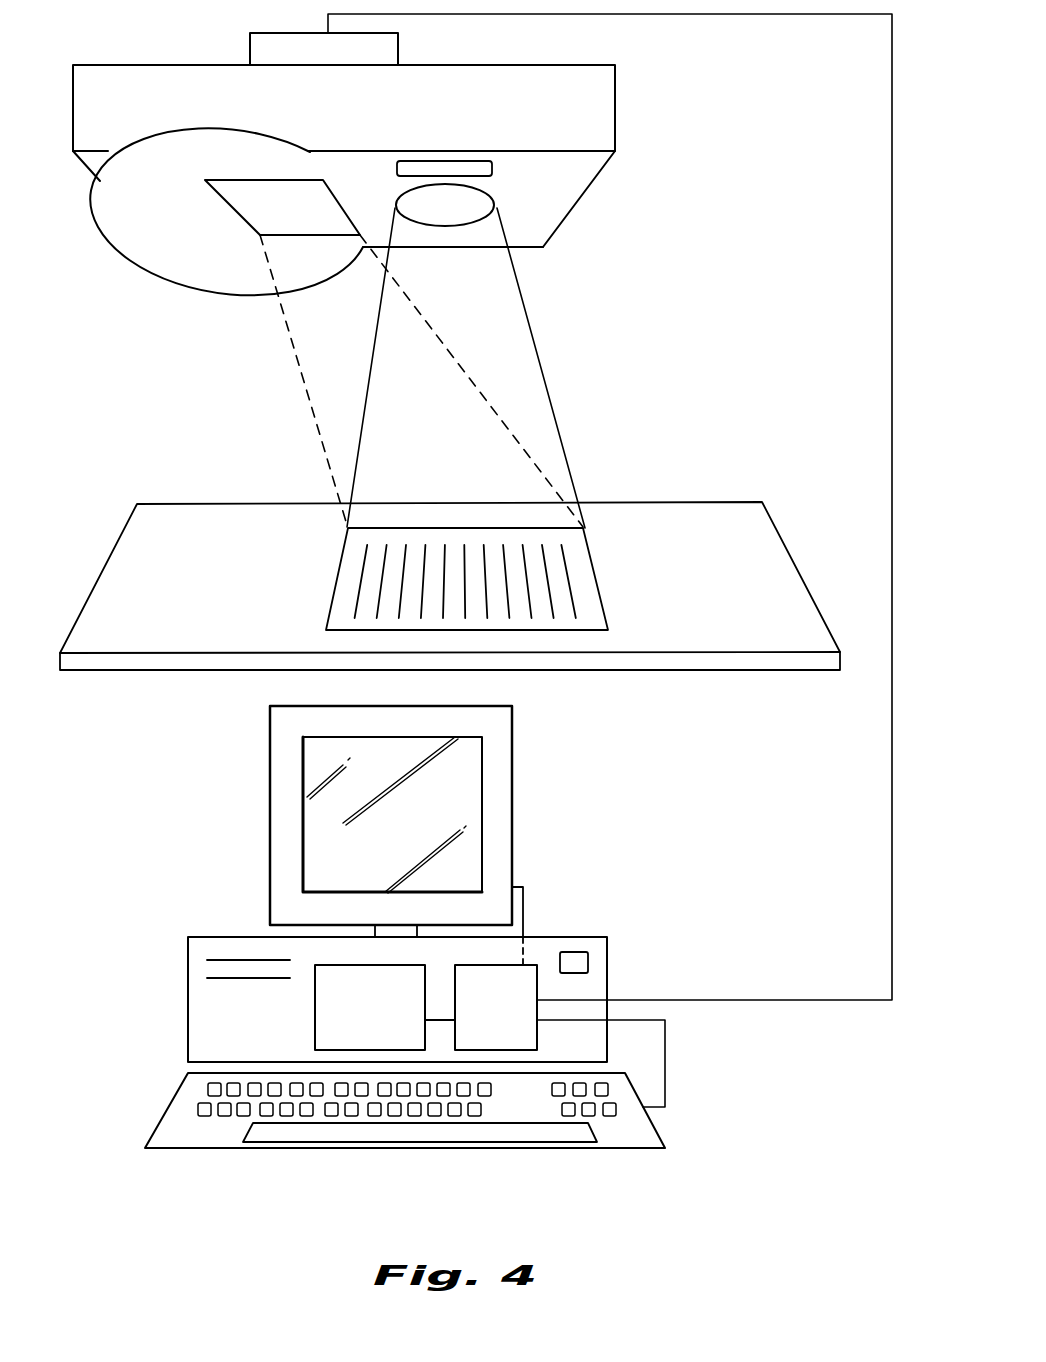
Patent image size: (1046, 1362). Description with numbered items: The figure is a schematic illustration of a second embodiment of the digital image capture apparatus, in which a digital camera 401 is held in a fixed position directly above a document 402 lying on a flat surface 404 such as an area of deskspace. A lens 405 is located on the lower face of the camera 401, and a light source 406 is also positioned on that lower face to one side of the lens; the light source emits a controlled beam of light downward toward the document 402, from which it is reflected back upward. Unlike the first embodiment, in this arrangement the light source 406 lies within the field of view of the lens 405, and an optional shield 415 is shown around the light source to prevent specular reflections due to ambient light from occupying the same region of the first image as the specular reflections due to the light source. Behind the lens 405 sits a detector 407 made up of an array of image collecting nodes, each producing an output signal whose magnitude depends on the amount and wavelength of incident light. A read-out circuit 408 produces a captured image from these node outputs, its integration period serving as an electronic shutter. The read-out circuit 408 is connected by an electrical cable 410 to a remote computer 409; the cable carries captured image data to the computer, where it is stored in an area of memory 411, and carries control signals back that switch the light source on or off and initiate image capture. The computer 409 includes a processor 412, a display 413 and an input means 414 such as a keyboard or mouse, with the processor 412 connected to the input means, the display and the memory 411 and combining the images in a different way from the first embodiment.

The digital camera 401 is at (670, 134).
The document 402 is at (596, 570).
The flat surface 404 is at (713, 500).
The lens 405 is at (465, 226).
The light source 406 is at (238, 217).
The detector 407 is at (492, 168).
The read-out circuit 408 is at (283, 33).
The computer 409 is at (392, 962).
The electrical cable 410 is at (892, 805).
The memory 411 is at (517, 1023).
The processor 412 is at (392, 1023).
The display 413 is at (505, 808).
The input means 414 is at (653, 1150).
The shield 415 is at (123, 256).